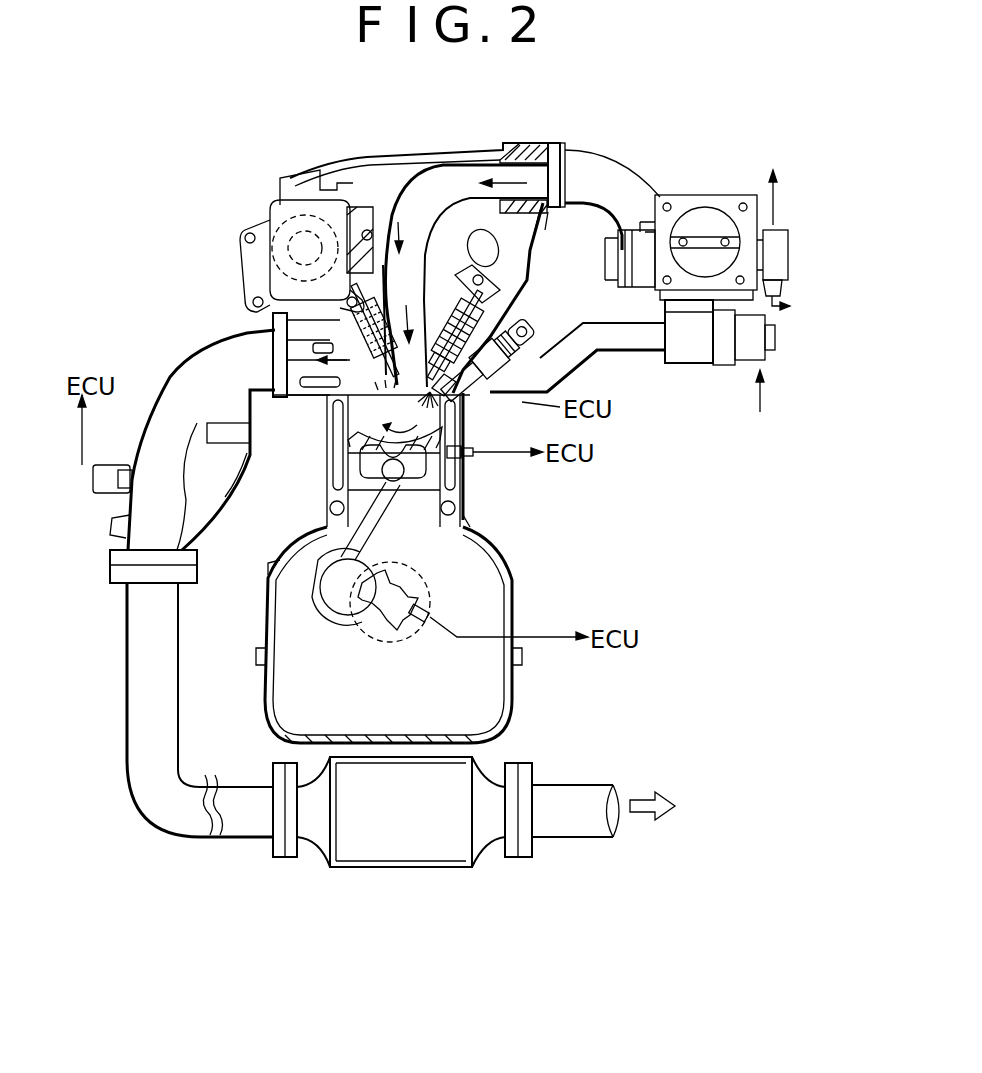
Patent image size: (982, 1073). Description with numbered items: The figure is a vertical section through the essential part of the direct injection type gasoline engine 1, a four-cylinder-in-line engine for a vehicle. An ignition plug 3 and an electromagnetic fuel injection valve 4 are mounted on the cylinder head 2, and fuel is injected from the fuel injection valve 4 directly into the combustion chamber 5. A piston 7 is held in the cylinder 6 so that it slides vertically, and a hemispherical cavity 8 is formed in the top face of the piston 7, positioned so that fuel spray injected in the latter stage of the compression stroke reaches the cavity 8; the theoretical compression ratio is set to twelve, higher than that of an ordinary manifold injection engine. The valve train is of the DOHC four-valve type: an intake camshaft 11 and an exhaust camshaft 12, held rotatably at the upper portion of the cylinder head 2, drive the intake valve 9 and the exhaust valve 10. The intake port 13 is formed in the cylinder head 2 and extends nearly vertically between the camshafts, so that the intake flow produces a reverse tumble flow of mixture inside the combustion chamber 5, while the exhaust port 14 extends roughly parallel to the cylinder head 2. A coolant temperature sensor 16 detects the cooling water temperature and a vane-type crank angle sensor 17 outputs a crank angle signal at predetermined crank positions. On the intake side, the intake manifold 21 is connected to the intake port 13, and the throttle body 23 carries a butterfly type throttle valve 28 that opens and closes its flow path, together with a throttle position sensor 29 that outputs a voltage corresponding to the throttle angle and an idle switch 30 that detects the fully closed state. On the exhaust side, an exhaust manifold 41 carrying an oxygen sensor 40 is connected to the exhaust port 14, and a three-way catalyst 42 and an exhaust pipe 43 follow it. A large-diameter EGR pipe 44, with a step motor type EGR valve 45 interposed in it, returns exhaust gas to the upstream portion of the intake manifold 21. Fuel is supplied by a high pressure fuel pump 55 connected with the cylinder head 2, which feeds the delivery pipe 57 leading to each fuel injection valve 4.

The direct injection type gasoline engine 1 is at (423, 415).
The cylinder head 2 is at (505, 300).
The ignition plug 3 is at (353, 200).
The electromagnetic fuel injection valve 4 is at (410, 282).
The combustion chamber 5 is at (357, 412).
The cylinder 6 is at (465, 505).
The piston 7 is at (350, 453).
The cavity 8 is at (403, 460).
The intake valve 9 is at (533, 324).
The exhaust valve 10 is at (275, 333).
The intake camshaft 11 is at (495, 245).
The exhaust camshaft 12 is at (275, 232).
The intake port 13 is at (432, 262).
The exhaust port 14 is at (295, 388).
The coolant temperature sensor 16 is at (473, 460).
The vane-type crank angle sensor 17 is at (427, 607).
The intake manifold 21 is at (590, 150).
The throttle body 23 is at (681, 217).
The throttle valve 28 is at (702, 210).
The throttle position sensor 29 is at (790, 245).
The idle switch 30 is at (785, 292).
The O2 sensor 40 is at (105, 462).
The exhaust manifold 41 is at (170, 375).
The three-way catalyst 42 is at (410, 850).
The exhaust pipe 43 is at (172, 692).
The EGR pipe 44 is at (620, 345).
The EGR valve 45 is at (688, 370).
The high pressure fuel pump 55 is at (270, 278).
The delivery pipe 57 is at (525, 350).